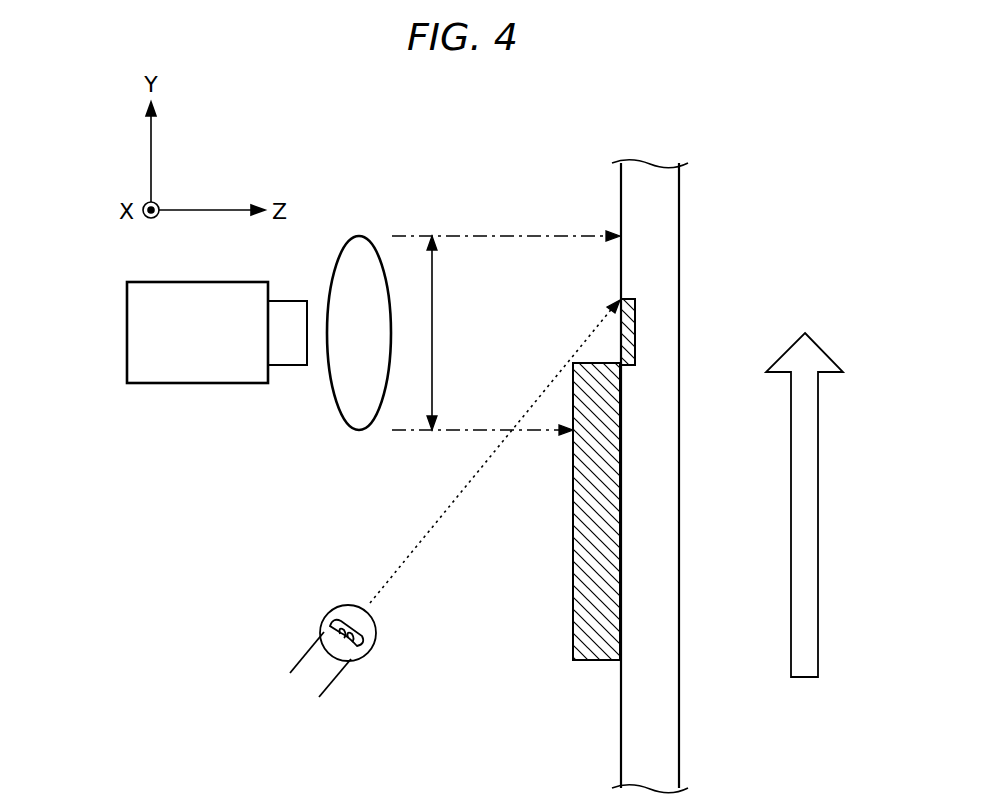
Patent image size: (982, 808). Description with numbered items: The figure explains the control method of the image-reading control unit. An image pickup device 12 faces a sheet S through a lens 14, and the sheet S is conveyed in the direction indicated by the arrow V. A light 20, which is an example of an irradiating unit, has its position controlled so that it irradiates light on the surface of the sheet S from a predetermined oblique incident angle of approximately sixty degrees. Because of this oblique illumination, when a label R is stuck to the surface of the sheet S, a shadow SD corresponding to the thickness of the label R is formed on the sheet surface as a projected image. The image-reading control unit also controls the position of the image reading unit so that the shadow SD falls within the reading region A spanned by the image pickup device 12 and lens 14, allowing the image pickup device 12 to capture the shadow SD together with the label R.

The image pickup device 12 is at (127, 331).
The lens 14 is at (330, 265).
The light 20 is at (314, 645).
The reading region A is at (440, 333).
The sheet S is at (680, 632).
The shadow SD is at (637, 331).
The label R is at (573, 546).
The arrow V is at (818, 523).